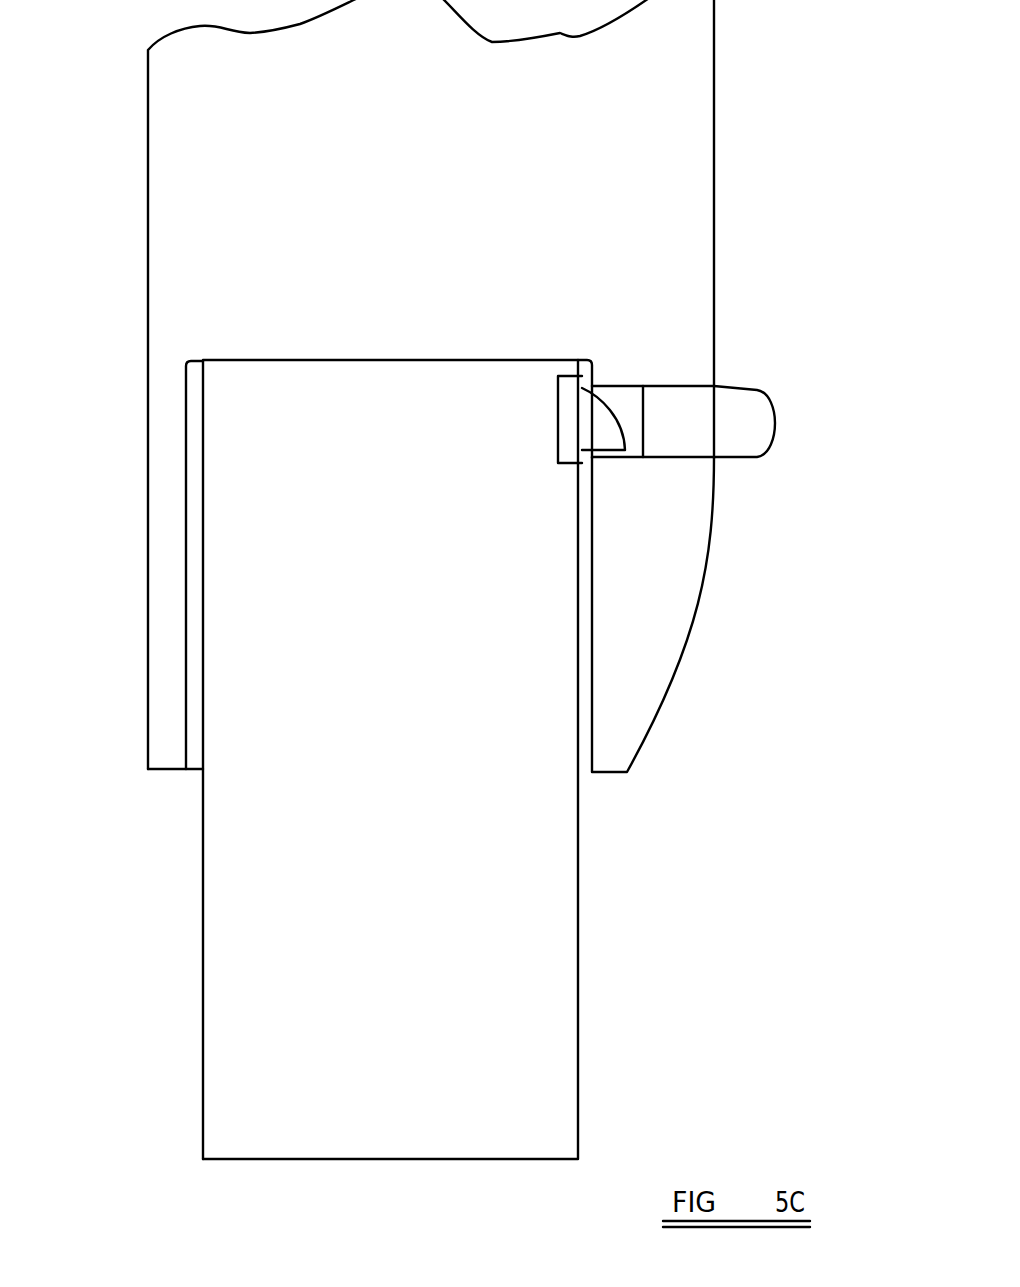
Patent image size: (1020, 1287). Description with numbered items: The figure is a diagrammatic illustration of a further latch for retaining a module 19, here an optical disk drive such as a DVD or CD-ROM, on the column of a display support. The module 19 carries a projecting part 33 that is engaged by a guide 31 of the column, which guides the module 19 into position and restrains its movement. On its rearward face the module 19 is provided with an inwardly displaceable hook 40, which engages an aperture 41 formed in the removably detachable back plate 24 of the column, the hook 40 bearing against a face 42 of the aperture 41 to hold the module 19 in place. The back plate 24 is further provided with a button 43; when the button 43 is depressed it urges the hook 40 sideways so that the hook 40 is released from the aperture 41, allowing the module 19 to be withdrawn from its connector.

The module 19 is at (233, 930).
The back plate 24 is at (670, 682).
The guide 31 is at (186, 495).
The projecting part 33 is at (208, 604).
The hook 40 is at (625, 457).
The aperture 41 is at (633, 440).
The face 42 is at (603, 448).
The button 43 is at (753, 407).